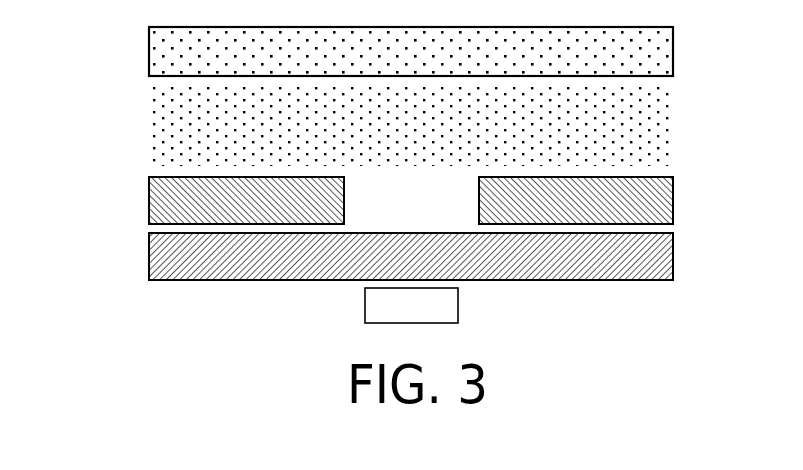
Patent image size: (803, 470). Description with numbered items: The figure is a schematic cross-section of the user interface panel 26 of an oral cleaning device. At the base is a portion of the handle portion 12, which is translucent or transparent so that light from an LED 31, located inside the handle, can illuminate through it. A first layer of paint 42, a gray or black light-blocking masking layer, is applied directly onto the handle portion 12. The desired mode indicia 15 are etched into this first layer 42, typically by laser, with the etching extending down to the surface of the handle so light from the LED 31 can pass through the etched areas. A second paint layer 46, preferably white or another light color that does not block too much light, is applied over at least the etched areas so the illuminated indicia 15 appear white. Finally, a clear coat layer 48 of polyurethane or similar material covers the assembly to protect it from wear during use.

The clear coat layer 48 is at (674, 46).
The second paint layer 46 is at (672, 118).
The first layer of paint 42 is at (674, 199).
The mode indicia 15 is at (425, 212).
The handle portion 12 is at (674, 254).
The LED 31 is at (459, 305).
The user interface panel 26 is at (120, 220).